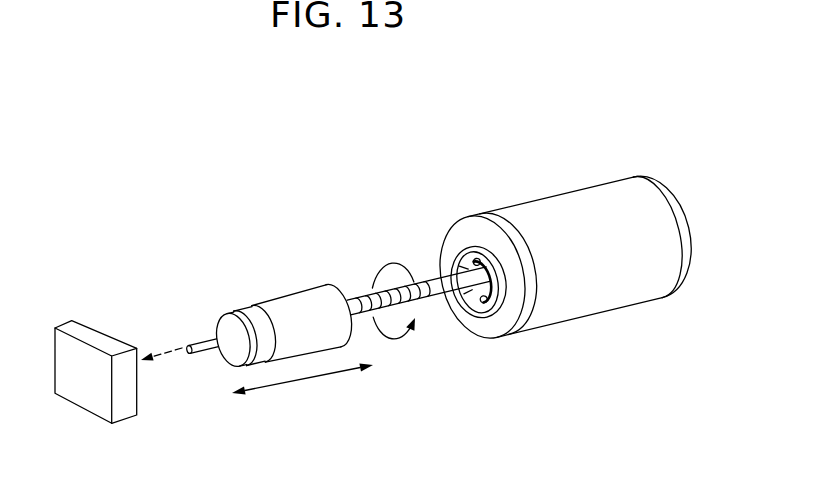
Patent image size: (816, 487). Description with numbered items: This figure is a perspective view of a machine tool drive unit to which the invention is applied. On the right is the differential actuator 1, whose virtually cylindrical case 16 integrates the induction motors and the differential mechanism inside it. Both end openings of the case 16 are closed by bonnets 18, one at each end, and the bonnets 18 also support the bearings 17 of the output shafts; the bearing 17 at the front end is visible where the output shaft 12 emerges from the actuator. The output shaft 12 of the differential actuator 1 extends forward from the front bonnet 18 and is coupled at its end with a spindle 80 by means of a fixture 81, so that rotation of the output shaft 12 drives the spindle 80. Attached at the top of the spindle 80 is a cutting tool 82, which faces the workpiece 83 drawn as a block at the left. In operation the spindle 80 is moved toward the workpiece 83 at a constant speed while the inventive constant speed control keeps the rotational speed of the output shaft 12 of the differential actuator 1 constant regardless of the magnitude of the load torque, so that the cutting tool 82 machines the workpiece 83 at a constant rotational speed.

The differential actuator 1 is at (599, 187).
The output shaft 12 is at (421, 276).
The case 16 is at (535, 210).
The bearings 17 is at (475, 320).
The bonnets 18 is at (470, 226).
The spindle 80 is at (255, 285).
The fixture 81 is at (304, 289).
The cutting tool 82 is at (203, 339).
The workpiece 83 is at (97, 327).